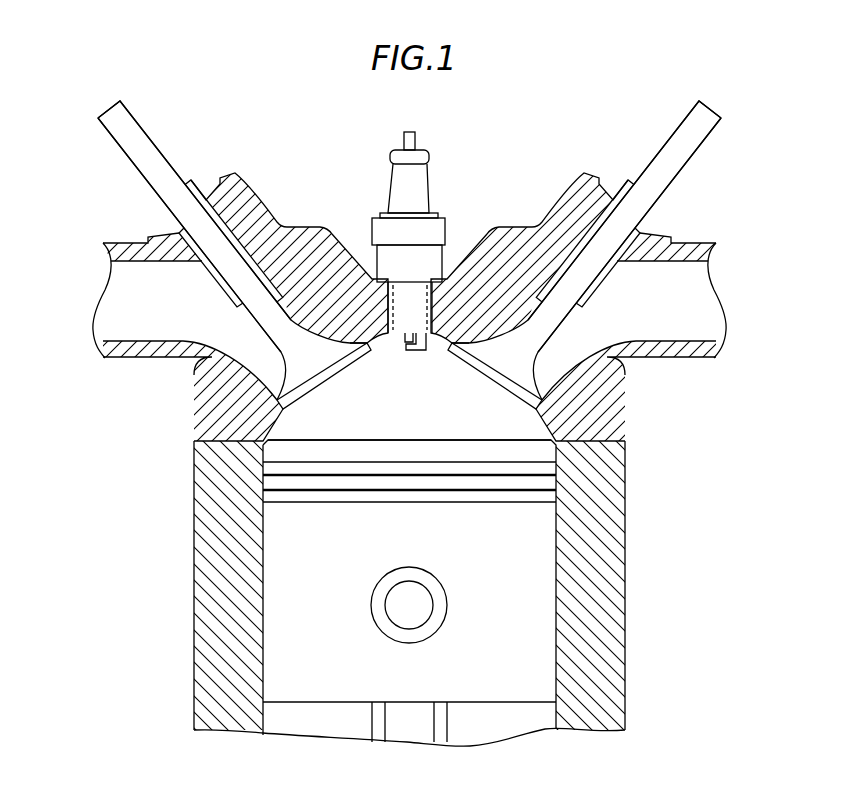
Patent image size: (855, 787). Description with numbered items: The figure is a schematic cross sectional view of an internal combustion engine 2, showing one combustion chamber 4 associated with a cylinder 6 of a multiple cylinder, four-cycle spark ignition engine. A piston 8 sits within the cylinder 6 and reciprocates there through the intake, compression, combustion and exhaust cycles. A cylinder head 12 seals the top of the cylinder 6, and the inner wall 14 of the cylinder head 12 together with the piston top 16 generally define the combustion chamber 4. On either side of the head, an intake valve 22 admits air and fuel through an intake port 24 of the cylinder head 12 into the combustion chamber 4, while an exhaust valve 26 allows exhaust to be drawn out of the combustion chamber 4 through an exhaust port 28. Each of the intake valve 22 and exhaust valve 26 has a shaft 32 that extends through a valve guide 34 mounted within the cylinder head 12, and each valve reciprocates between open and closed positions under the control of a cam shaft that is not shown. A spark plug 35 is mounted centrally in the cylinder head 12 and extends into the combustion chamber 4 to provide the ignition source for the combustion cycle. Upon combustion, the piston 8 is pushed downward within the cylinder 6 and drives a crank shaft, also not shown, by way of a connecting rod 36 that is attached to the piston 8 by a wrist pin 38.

The internal combustion engine 2 is at (668, 485).
The combustion chamber 4 is at (297, 414).
The cylinder 6 is at (592, 553).
The piston 8 is at (528, 608).
The cylinder head 12 is at (593, 392).
The inner wall 14 is at (440, 343).
The piston top 16 is at (415, 439).
The intake valve 22 is at (520, 350).
The intake port 24 is at (680, 302).
The exhaust valve 26 is at (300, 352).
The exhaust port 28 is at (137, 299).
The shaft 32 is at (128, 147).
The valve guide 34 is at (160, 204).
The spark plug 35 is at (416, 170).
The connecting rod 36 is at (410, 727).
The wrist pin 38 is at (405, 606).